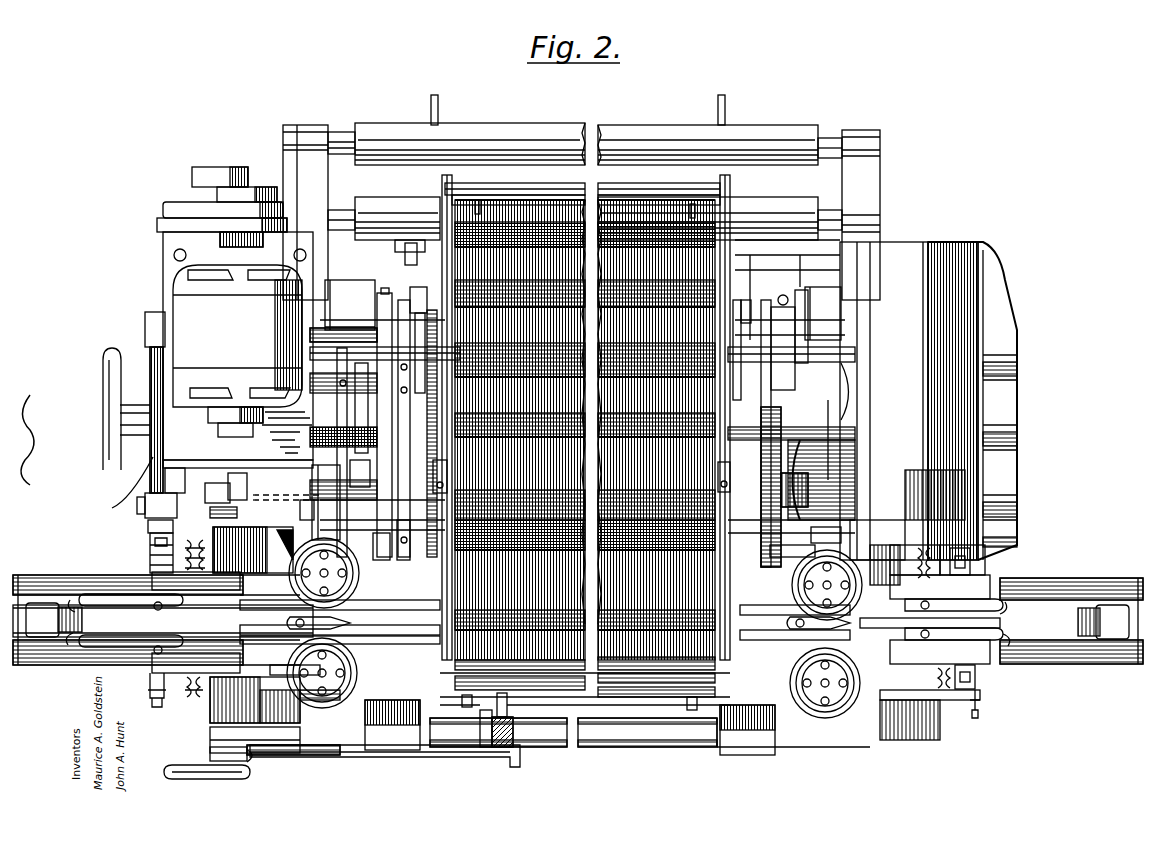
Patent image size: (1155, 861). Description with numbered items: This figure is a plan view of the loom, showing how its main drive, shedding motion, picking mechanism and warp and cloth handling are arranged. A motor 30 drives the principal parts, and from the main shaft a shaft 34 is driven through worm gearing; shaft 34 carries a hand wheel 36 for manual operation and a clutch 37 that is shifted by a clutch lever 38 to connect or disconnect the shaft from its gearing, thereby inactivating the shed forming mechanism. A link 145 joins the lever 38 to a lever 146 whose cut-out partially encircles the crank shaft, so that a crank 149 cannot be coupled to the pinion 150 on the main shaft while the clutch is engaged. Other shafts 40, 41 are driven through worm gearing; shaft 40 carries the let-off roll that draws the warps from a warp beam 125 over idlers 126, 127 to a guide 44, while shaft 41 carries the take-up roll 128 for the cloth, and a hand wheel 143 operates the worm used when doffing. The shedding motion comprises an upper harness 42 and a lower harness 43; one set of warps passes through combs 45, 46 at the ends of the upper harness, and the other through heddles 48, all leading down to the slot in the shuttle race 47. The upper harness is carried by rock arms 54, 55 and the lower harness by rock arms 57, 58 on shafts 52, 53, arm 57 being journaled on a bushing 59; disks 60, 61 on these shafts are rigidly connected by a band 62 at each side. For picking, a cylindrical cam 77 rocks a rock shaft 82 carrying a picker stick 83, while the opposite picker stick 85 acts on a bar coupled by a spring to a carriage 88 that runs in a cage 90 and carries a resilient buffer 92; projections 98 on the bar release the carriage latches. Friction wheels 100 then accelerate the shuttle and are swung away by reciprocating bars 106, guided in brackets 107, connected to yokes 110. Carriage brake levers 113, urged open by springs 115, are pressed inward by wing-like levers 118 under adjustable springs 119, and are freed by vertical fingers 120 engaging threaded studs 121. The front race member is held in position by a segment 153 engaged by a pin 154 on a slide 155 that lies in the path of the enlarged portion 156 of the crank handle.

The motor 30 is at (185, 315).
The shaft 34 is at (455, 422).
The hand wheel 36 is at (103, 355).
The clutch 37 is at (337, 390).
The clutch lever 38 is at (361, 366).
The shaft 40 is at (395, 246).
The shaft 41 is at (412, 545).
The upper harness 42 is at (766, 300).
The lower harness 43 is at (735, 212).
The guide 44 is at (443, 265).
The comb 45 is at (712, 420).
The comb 46 is at (673, 672).
The shuttle race 47 is at (240, 690).
The heddles 48 is at (700, 225).
The shaft 52 is at (340, 318).
The shaft 53 is at (311, 505).
The rock arm 54 is at (398, 335).
The rock arm 55 is at (373, 545).
The rock arm 57 is at (420, 290).
The rock arm 58 is at (443, 472).
The bushing 59 is at (768, 340).
The disk 60 is at (390, 298).
The disk 61 is at (370, 468).
The band 62 is at (415, 413).
The cylindrical cam 77 is at (835, 358).
The rock shaft 82 is at (800, 565).
The picker stick 83 is at (795, 630).
The picker stick 85 is at (340, 625).
The carriage 88 is at (45, 660).
The cage 90 is at (68, 590).
The resilient buffer 92 is at (45, 600).
The projections 98 is at (190, 612).
The friction wheels 100 is at (330, 710).
The reciprocating bar 106 is at (119, 460).
The bracket 107 is at (145, 323).
The yoke 110 is at (150, 540).
The carriage brake levers 113 is at (112, 598).
The springs 115 is at (75, 600).
The wing-like levers 118 is at (184, 545).
The adjustable springs 119 is at (985, 600).
The vertical fingers 120 is at (975, 570).
The threaded studs 121 is at (978, 718).
The warp beam 125 is at (728, 118).
The idler 126 is at (783, 140).
The idler 127 is at (795, 215).
The take-up roll 128 is at (573, 723).
The hand wheel 143 is at (170, 768).
The link 145 is at (312, 498).
The lever 146 is at (205, 490).
The crank 149 is at (245, 754).
The pinion 150 is at (256, 494).
The segment 153 is at (507, 705).
The pin 154 is at (480, 713).
The slide 155 is at (445, 752).
The enlarged portion 156 is at (210, 748).